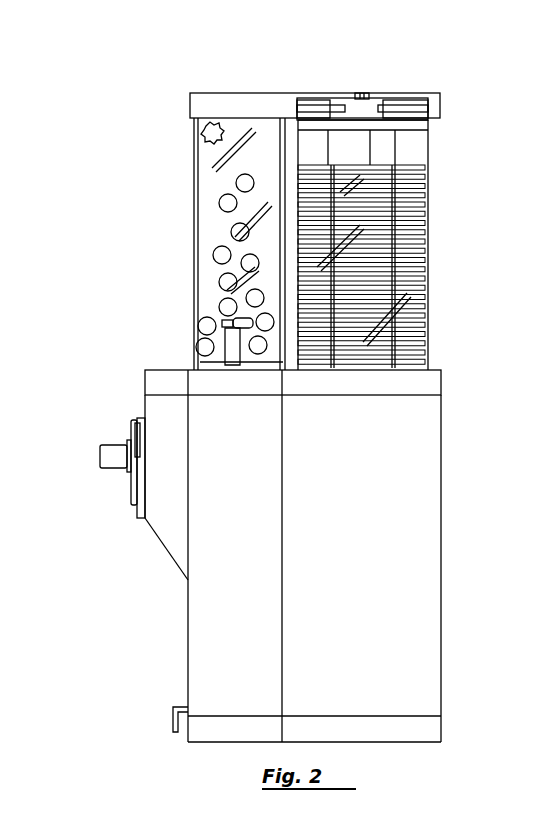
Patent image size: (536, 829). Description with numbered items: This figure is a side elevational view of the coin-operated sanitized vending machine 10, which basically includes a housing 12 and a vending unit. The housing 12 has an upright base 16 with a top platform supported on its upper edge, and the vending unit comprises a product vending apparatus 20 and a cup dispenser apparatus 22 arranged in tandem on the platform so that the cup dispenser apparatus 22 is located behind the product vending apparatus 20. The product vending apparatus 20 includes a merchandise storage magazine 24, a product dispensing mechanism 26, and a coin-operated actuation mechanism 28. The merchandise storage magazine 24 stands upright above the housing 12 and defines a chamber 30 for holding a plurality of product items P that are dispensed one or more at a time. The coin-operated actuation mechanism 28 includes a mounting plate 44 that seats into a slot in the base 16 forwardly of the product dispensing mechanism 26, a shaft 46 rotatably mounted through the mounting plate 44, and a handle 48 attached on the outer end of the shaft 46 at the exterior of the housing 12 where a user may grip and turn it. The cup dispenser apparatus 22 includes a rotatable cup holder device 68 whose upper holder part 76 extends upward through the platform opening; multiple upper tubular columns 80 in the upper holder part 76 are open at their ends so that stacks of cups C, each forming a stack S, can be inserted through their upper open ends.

The sanitized vending machine 10 is at (425, 75).
The housing 12 is at (443, 462).
The upright base 16 is at (441, 588).
The product vending apparatus 20 is at (237, 374).
The cup dispenser apparatus 22 is at (431, 356).
The merchandise storage magazine 24 is at (193, 222).
The product dispensing mechanism 26 is at (228, 365).
The coin-operated actuation mechanism 28 is at (98, 471).
The chamber 30 is at (205, 133).
The mounting plate 44 is at (145, 520).
The shaft 46 is at (130, 470).
The handle 48 is at (108, 452).
The cup holder device 68 is at (431, 250).
The upper holder part 76 is at (306, 93).
The upper tubular columns 80 is at (298, 148).
The stack S is at (372, 163).
The cups C is at (308, 248).
The product items P is at (232, 303).